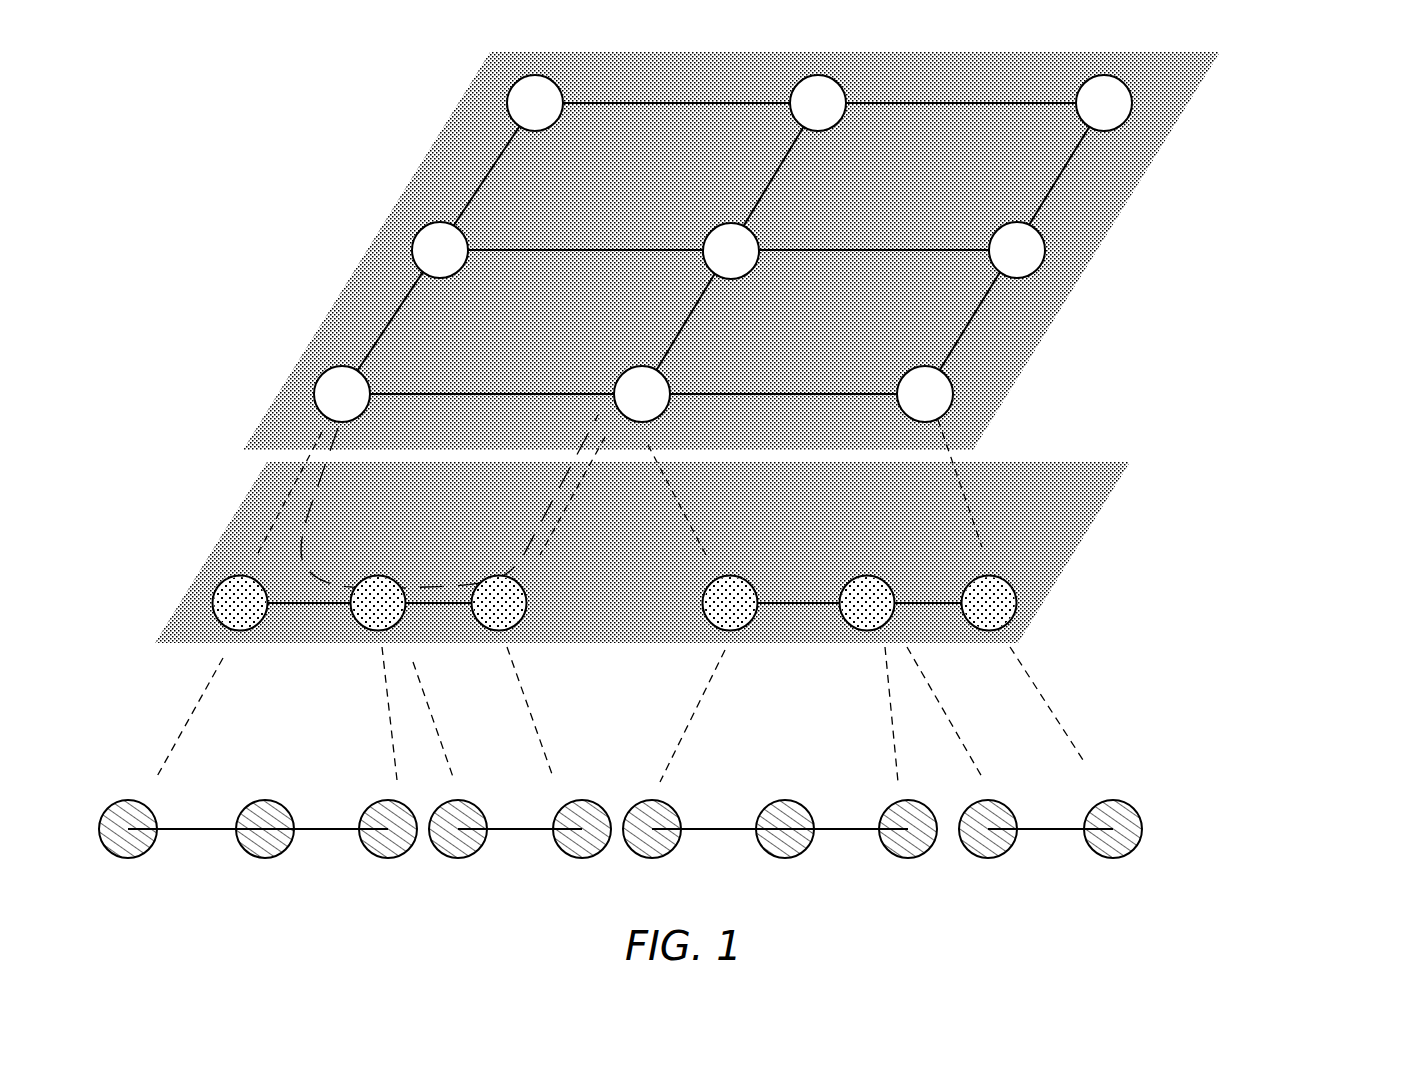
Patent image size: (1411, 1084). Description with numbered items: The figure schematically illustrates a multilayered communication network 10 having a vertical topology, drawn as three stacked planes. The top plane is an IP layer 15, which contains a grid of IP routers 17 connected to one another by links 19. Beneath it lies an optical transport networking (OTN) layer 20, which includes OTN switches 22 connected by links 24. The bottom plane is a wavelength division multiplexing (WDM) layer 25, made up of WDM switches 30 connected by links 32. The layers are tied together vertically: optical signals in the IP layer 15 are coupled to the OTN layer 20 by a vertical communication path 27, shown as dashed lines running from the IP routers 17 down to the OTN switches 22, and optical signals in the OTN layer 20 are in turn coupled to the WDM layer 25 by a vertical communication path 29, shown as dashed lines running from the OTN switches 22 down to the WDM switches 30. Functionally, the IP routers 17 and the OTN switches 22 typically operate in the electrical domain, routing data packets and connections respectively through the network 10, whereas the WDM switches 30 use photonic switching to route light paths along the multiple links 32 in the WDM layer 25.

The multilayered communication network 10 is at (386, 168).
The IP layer 15 is at (780, 246).
The IP routers 17 is at (507, 106).
The links 19 is at (982, 105).
The optical transport networking (OTN) layer 20 is at (718, 583).
The OTN switches 22 is at (212, 603).
The links 24 is at (328, 605).
The wavelength division multiplexing (WDM) layer 25 is at (755, 847).
The vertical communication path 27 is at (289, 497).
The vertical communication path 29 is at (198, 700).
The WDM switches 30 is at (265, 858).
The links 32 is at (703, 830).